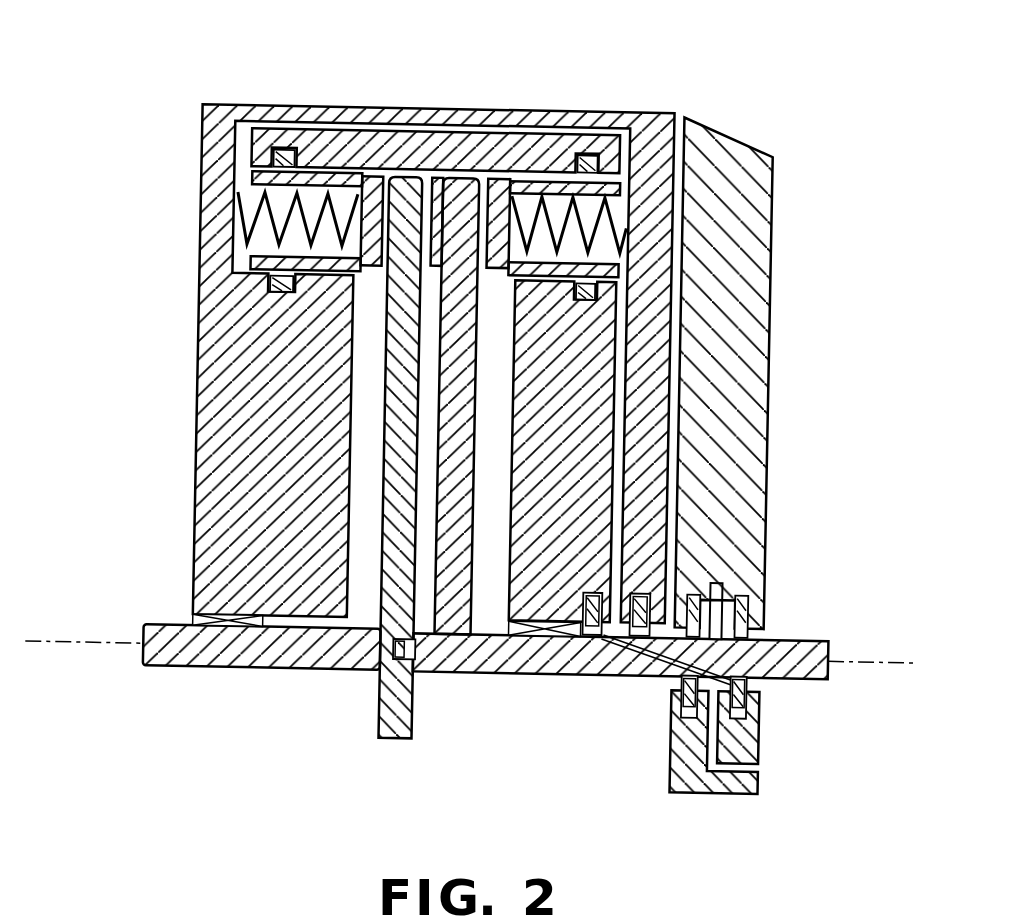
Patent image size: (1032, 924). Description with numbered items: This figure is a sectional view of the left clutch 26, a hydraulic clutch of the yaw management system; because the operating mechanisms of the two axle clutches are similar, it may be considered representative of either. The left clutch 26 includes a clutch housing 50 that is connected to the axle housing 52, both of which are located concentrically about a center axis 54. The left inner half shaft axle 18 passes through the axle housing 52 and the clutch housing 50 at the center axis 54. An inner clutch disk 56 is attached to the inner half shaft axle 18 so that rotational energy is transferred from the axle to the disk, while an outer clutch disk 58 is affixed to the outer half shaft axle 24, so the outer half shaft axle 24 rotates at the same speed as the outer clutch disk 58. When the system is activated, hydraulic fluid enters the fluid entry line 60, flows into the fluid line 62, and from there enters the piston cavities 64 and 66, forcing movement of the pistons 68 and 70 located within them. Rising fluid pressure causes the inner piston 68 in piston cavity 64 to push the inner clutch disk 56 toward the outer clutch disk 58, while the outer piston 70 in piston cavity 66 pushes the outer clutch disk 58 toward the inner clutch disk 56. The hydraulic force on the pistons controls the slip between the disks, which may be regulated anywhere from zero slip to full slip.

The left clutch 26 is at (477, 410).
The outer piston 70 is at (313, 178).
The outer clutch disk 58 is at (401, 187).
The inner clutch disk 56 is at (458, 191).
The inner piston 68 is at (526, 184).
The piston cavity 66 is at (248, 198).
The piston cavity 64 is at (609, 200).
The axle housing 52 is at (750, 285).
The clutch housing 50 is at (205, 411).
The fluid line 62 is at (619, 453).
The outer half shaft axle 24 is at (152, 632).
The left inner half shaft axle 18 is at (788, 643).
The center axis 54 is at (880, 650).
The fluid entry line 60 is at (759, 765).